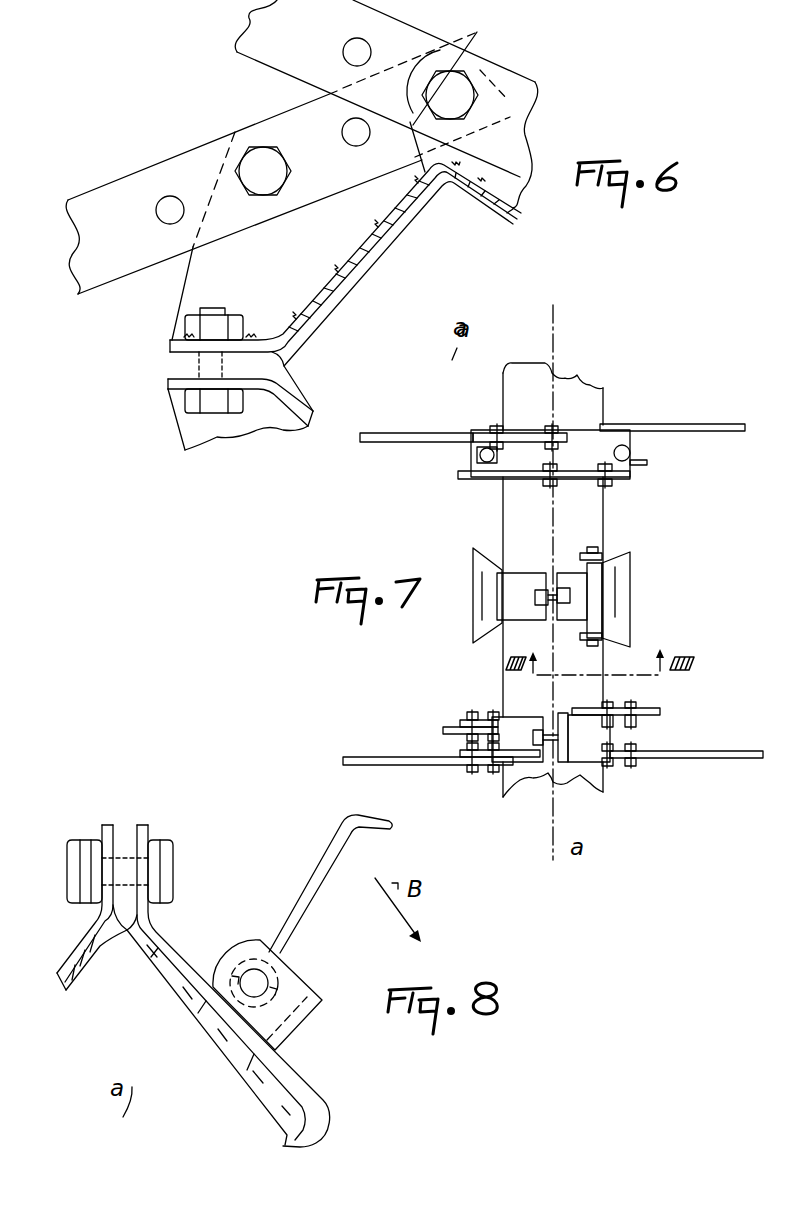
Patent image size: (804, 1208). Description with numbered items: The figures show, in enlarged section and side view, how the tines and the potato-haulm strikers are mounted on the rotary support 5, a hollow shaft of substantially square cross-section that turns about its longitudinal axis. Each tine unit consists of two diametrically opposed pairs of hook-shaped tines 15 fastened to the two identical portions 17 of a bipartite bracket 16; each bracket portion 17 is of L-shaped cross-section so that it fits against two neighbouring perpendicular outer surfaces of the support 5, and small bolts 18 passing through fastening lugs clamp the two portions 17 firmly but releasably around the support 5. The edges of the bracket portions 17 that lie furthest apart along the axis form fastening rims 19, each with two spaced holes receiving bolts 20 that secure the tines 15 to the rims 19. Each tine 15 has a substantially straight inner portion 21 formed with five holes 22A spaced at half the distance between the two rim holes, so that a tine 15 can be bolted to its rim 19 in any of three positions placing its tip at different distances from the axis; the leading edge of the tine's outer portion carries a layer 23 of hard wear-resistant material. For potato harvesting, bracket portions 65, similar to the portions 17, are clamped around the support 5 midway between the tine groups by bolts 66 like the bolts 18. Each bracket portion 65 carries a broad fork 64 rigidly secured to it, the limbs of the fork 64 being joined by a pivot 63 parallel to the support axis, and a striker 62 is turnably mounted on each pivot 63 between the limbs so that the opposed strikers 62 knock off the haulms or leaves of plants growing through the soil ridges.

In FIG. 6, the rotary support 5 is at (383, 240).
In FIG. 7, the rotary support 5 is at (570, 374).
In FIG. 8, the rotary support 5 is at (257, 1062).
In FIG. 6, the hook-shaped tine 15 is at (247, 48).
In FIG. 7, the hook-shaped tine 15 is at (413, 436).
In FIG. 6, the bipartite bracket 16 is at (516, 205).
In FIG. 7, the bipartite bracket 16 is at (636, 480).
In FIG. 6, the bracket portion 17 is at (312, 298).
In FIG. 7, the bracket portion 17 is at (581, 436).
In FIG. 6, the bolt 18 is at (215, 403).
In FIG. 7, the bolt 18 is at (473, 459).
In FIG. 6, the fastening rim 19 is at (530, 108).
In FIG. 7, the fastening rim 19 is at (518, 438).
In FIG. 6, the bolt 20 is at (462, 82).
In FIG. 7, the bolt 20 is at (500, 428).
In FIG. 6, the inner portion 21 is at (282, 55).
In FIG. 6, the hole 22A is at (343, 50).
In FIG. 7, the layer of hard wear-resistant material 23 is at (387, 443).
In FIG. 7, the striker 62 is at (473, 615).
In FIG. 8, the striker 62 is at (313, 868).
In FIG. 7, the pivot 63 is at (598, 553).
In FIG. 8, the pivot 63 is at (261, 980).
In FIG. 7, the broad fork 64 is at (601, 630).
In FIG. 8, the broad fork 64 is at (257, 943).
In FIG. 7, the bracket portion 65 is at (566, 565).
In FIG. 8, the bracket portion 65 is at (77, 957).
In FIG. 7, the bolt 66 is at (533, 598).
In FIG. 8, the bolt 66 is at (163, 898).